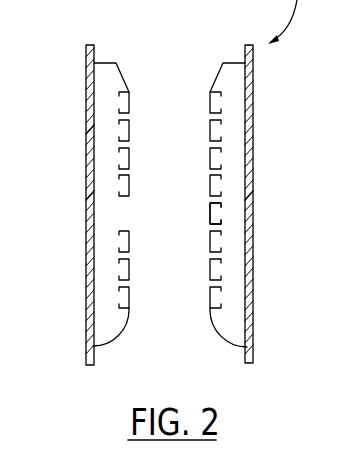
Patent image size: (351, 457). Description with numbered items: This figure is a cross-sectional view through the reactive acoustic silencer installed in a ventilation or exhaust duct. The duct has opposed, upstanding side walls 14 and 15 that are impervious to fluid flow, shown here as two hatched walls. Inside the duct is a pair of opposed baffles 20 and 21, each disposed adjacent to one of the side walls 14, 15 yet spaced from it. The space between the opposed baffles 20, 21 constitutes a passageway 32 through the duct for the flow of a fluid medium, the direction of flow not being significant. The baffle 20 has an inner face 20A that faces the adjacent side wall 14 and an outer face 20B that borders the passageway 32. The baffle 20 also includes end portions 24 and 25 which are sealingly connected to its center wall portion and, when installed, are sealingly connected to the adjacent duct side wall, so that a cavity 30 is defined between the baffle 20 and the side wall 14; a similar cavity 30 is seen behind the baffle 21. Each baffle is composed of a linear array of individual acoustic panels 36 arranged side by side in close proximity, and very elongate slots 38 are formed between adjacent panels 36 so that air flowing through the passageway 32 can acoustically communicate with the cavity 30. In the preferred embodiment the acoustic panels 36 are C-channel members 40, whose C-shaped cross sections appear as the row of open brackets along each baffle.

The side wall 14 is at (253, 302).
The side wall 15 is at (87, 222).
The baffle 20 is at (230, 170).
The inner face 20A is at (230, 220).
The outer face 20B is at (203, 223).
The baffle 21 is at (106, 143).
The end portion 24 is at (118, 336).
The end portion 25 is at (122, 77).
The cavity 30 is at (103, 193).
The passageway 32 is at (181, 283).
The acoustic panel 36 is at (209, 133).
The slot 38 is at (208, 115).
The C-channel member 40 is at (208, 270).